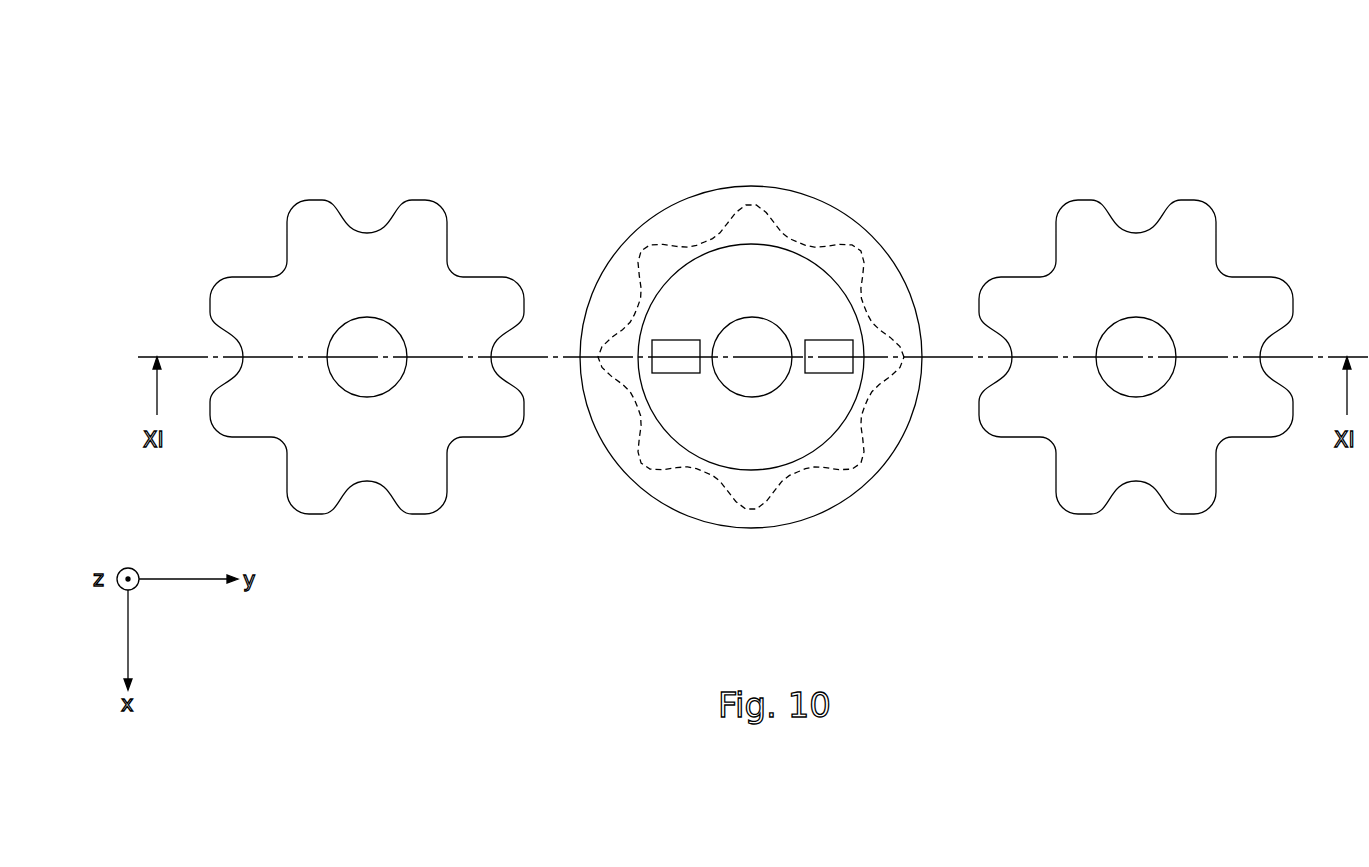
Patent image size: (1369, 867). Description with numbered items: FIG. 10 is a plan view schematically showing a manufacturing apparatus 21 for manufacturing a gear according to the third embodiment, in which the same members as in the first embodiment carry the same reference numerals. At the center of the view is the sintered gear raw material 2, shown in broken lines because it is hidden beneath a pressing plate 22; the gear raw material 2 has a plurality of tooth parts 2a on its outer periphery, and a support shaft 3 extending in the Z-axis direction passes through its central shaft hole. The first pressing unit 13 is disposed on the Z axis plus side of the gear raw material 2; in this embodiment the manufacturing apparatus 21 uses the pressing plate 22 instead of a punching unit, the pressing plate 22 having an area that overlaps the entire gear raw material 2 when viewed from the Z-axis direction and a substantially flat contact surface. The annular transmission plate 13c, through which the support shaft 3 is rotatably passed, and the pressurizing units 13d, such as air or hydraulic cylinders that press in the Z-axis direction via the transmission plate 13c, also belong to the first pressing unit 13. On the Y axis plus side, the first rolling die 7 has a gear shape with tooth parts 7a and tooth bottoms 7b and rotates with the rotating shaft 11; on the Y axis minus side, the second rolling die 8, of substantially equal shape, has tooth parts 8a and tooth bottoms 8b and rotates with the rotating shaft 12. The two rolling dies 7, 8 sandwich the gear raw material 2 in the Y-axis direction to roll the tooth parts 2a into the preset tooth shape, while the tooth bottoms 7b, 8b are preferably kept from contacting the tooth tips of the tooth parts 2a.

The manufacturing apparatus 21 is at (1251, 43).
The second rolling die 8 is at (347, 345).
The tooth parts 8a is at (375, 205).
The tooth bottoms 8b is at (367, 236).
The rotating shaft 12 is at (366, 380).
The first rolling die 7 is at (1157, 355).
The tooth parts 7a is at (1144, 205).
The tooth bottoms 7b is at (1136, 235).
The rotating shaft 11 is at (1135, 387).
The first pressing unit 13 is at (780, 357).
The pressing plate 22 is at (690, 205).
The transmission plate 13c is at (806, 448).
The pressurizing units 13d is at (660, 362).
The support shaft 3 is at (741, 385).
The gear raw material 2 is at (790, 232).
The tooth parts 2a is at (899, 223).